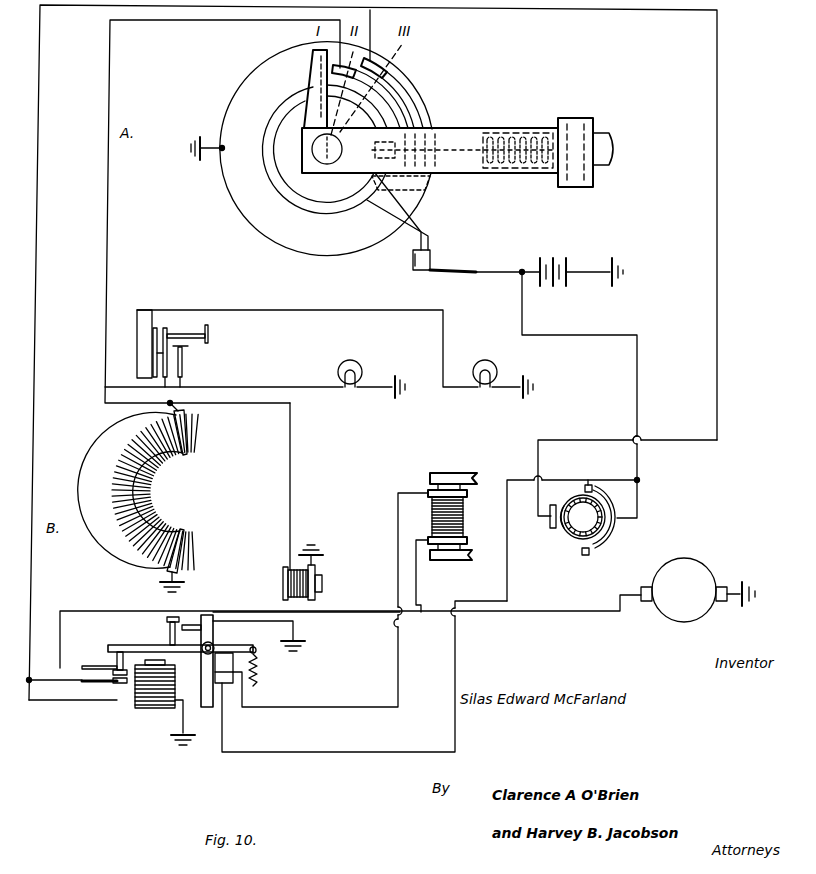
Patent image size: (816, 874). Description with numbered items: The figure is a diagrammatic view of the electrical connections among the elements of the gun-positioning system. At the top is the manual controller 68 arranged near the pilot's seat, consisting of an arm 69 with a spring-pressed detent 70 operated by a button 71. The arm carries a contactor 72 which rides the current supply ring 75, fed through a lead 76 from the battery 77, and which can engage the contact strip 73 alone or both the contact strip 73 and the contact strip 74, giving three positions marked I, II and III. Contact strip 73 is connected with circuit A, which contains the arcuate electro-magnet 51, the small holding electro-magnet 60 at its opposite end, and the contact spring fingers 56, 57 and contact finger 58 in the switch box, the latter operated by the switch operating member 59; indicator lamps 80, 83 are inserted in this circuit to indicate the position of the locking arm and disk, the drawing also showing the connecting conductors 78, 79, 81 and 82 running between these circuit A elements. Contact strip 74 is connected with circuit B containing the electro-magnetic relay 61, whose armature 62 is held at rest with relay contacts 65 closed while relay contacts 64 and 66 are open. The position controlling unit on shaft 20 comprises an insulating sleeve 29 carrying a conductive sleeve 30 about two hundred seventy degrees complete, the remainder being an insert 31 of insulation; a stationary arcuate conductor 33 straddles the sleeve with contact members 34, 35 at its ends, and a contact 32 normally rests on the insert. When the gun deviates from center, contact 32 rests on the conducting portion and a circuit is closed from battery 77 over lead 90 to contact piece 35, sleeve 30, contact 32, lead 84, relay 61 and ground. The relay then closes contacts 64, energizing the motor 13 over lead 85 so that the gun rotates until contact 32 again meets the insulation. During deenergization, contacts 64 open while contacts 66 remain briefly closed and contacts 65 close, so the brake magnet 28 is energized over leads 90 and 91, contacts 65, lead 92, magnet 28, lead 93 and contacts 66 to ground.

The motor 13 is at (683, 566).
The shaft 20 is at (583, 517).
The electro-magnet 28 is at (465, 512).
The sleeve of insulating material 29 is at (570, 500).
The sleeve of conductive material 30 is at (576, 542).
The insert of insulation 31 is at (562, 535).
The contact 32 is at (551, 524).
The stationary arcuate-shaped current conductor 33 is at (614, 539).
The contact member 34 is at (591, 553).
The contact member 35 is at (590, 484).
The electro-magnet 51 is at (114, 480).
The contact spring finger 56 is at (157, 311).
The contact spring finger 57 is at (167, 326).
The contact finger 58 is at (183, 360).
The switch operating member 59 is at (188, 332).
The holding electro-magnet 60 is at (318, 579).
The electro-magnetic relay 61 is at (152, 693).
The armature 62 is at (127, 645).
The relay contacts 64 is at (115, 683).
The relay contacts 65 is at (234, 690).
The relay contacts 66 is at (189, 621).
The manual controller 68 is at (436, 112).
The arm 69 is at (455, 174).
The spring-pressed detent 70 is at (470, 140).
The button 71 is at (613, 138).
The contactor 72 is at (282, 62).
The contact strip 73 is at (381, 94).
The contact strip 74 is at (409, 98).
The current supply ring 75 is at (275, 189).
The lead 76 is at (487, 269).
The battery 77 is at (558, 269).
The conductor 78 is at (108, 201).
The conductor 79 is at (294, 491).
The indicator lamp 80 is at (483, 359).
The conductor 81 is at (292, 310).
The conductor 82 is at (254, 386).
The indicator lamp 83 is at (362, 368).
The lead 84 is at (36, 297).
The lead 85 is at (90, 611).
The lead 90 is at (642, 372).
The lead 91 is at (509, 586).
The lead 92 is at (400, 672).
The lead 93 is at (421, 584).